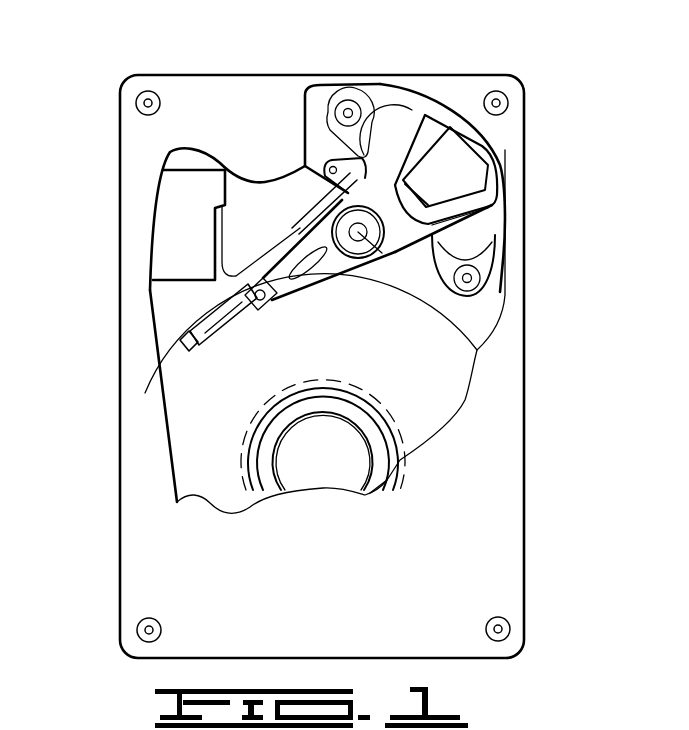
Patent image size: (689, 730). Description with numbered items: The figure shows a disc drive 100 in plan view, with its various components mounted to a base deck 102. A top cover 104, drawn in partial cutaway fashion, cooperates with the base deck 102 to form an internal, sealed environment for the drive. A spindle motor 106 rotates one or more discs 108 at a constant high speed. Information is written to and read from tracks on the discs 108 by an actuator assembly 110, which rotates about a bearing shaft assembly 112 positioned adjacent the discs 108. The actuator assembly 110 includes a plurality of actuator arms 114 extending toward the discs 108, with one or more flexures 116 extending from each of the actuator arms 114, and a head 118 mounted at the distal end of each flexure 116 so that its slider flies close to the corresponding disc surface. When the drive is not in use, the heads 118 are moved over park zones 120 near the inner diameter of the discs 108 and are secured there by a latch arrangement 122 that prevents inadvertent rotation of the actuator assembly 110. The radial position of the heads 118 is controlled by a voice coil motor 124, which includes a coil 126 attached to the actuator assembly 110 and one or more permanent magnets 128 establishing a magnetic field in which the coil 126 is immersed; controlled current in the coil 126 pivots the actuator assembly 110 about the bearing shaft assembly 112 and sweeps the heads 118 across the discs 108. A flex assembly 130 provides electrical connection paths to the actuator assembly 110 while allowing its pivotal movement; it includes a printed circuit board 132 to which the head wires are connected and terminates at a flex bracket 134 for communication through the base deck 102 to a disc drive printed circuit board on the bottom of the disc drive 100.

The disc drive 100 is at (162, 62).
The base deck 102 is at (165, 318).
The top cover 104 is at (160, 522).
The spindle motor 106 is at (328, 465).
The discs 108 is at (437, 388).
The actuator assembly 110 is at (343, 255).
The bearing shaft assembly 112 is at (413, 298).
The actuator arms 114 is at (320, 262).
The flexures 116 is at (227, 320).
The head 118 is at (180, 350).
The park zones 120 is at (247, 433).
The latch arrangement 122 is at (322, 160).
The voice coil motor 124 is at (393, 120).
The coil 126 is at (488, 163).
The permanent magnets 128 is at (380, 135).
The flex assembly 130 is at (303, 232).
The printed circuit board 132 is at (340, 208).
The flex bracket 134 is at (175, 233).